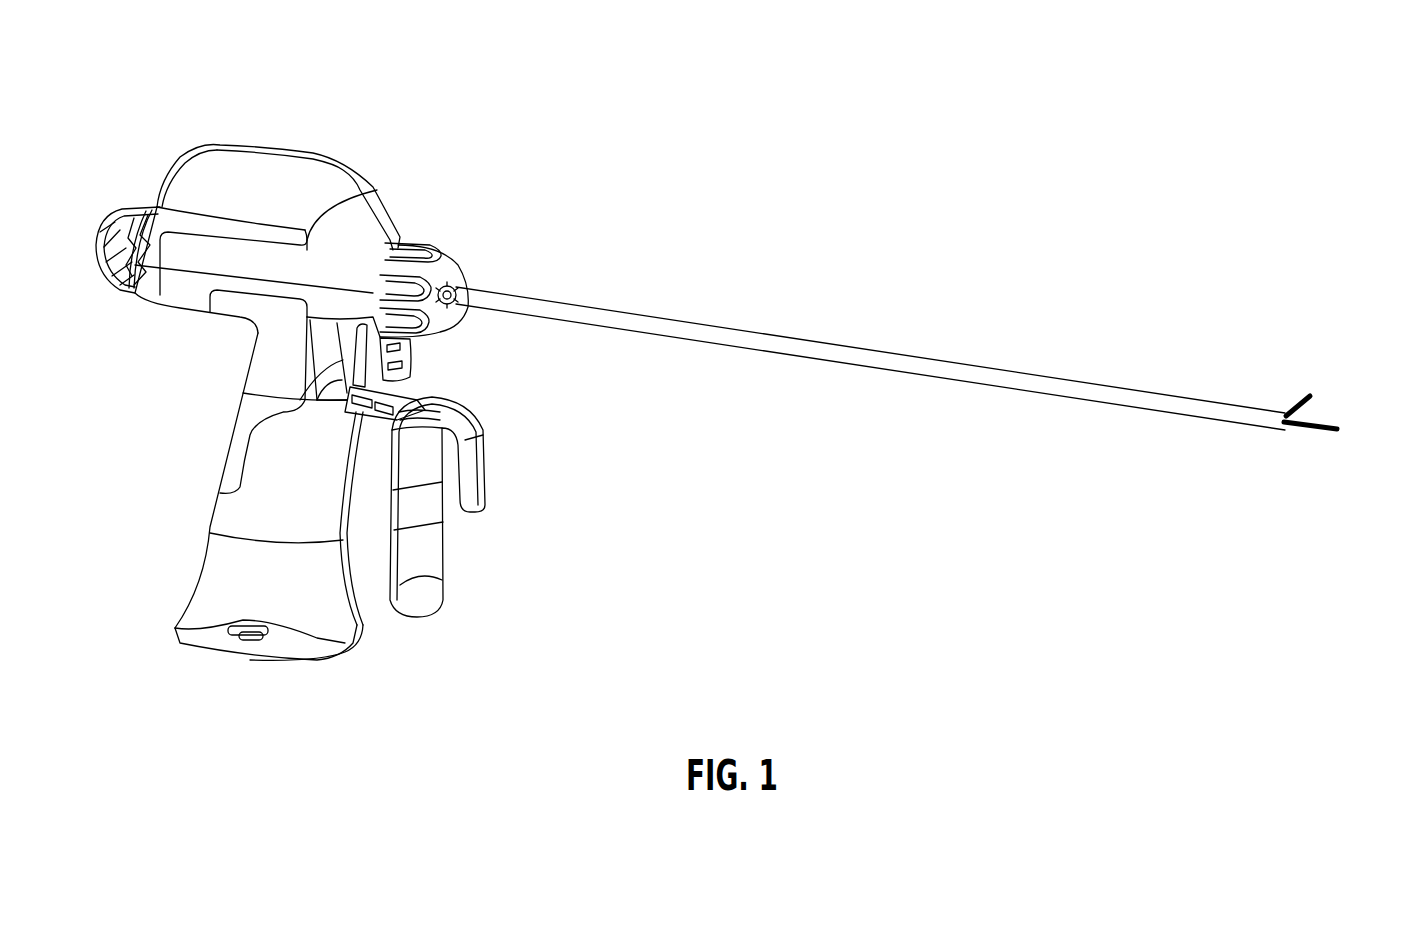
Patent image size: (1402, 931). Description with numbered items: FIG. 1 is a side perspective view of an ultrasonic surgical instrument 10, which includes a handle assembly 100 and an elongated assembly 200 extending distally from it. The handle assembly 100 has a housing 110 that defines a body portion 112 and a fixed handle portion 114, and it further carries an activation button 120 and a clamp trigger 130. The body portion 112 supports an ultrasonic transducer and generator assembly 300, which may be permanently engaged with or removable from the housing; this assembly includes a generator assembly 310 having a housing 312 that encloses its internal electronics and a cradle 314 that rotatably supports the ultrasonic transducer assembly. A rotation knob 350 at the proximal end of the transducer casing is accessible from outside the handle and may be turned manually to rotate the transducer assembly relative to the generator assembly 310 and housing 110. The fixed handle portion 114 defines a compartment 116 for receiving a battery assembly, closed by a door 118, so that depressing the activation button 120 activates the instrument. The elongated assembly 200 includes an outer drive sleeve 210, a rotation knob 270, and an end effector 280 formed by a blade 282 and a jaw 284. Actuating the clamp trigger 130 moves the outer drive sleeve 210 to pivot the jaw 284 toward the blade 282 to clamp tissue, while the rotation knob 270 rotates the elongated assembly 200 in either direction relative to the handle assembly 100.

The ultrasonic surgical instrument 10 is at (938, 170).
The handle assembly 100 is at (366, 676).
The housing 110 is at (231, 303).
The body portion 112 is at (366, 232).
The fixed handle portion 114 is at (245, 507).
The compartment 116 is at (223, 580).
The door 118 is at (223, 636).
The activation button 120 is at (410, 352).
The clamp trigger 130 is at (432, 585).
The elongated assembly 200 is at (745, 297).
The outer drive sleeve 210 is at (944, 366).
The rotation knob 270 is at (455, 268).
The end effector 280 is at (1347, 368).
The blade 282 is at (1312, 432).
The jaw 284 is at (1312, 398).
The ultrasonic transducer and generator assembly 300 is at (287, 122).
The generator assembly 310 is at (365, 158).
The housing 312 is at (246, 168).
The cradle 314 is at (142, 278).
The rotation knob 350 is at (108, 250).